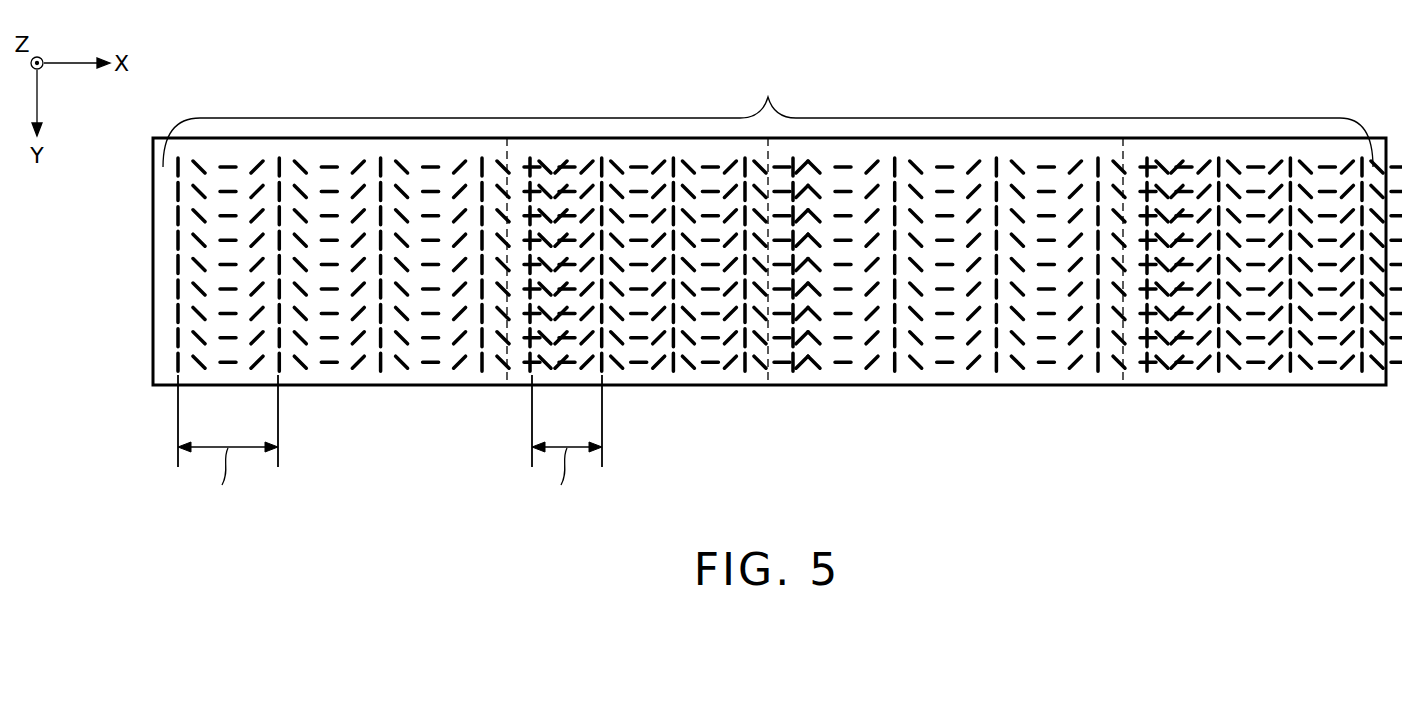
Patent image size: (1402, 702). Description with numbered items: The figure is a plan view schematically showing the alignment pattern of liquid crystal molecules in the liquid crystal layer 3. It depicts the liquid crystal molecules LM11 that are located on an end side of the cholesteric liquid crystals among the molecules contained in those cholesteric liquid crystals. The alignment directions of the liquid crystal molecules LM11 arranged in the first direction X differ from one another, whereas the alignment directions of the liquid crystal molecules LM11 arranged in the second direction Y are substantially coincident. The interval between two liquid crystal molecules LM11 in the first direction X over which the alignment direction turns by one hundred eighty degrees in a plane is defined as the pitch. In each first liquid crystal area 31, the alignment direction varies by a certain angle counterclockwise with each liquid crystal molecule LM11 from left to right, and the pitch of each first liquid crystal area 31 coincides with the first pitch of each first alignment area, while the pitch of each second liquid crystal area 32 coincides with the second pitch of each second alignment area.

The liquid crystal layer 3 is at (1331, 392).
The first liquid crystal area 31 is at (438, 386).
The second liquid crystal area 32 is at (718, 386).
The liquid crystal molecules LM11 is at (768, 116).